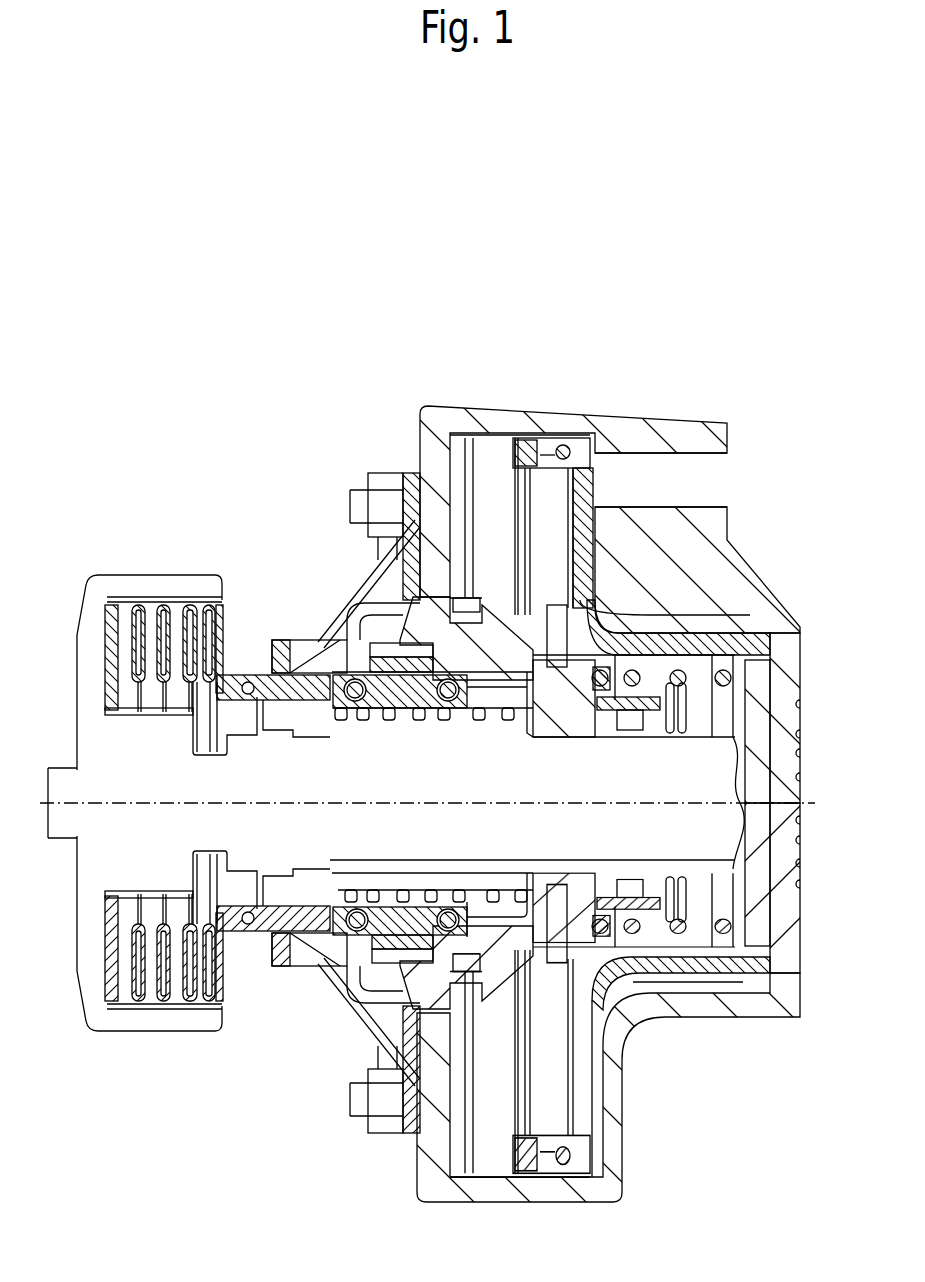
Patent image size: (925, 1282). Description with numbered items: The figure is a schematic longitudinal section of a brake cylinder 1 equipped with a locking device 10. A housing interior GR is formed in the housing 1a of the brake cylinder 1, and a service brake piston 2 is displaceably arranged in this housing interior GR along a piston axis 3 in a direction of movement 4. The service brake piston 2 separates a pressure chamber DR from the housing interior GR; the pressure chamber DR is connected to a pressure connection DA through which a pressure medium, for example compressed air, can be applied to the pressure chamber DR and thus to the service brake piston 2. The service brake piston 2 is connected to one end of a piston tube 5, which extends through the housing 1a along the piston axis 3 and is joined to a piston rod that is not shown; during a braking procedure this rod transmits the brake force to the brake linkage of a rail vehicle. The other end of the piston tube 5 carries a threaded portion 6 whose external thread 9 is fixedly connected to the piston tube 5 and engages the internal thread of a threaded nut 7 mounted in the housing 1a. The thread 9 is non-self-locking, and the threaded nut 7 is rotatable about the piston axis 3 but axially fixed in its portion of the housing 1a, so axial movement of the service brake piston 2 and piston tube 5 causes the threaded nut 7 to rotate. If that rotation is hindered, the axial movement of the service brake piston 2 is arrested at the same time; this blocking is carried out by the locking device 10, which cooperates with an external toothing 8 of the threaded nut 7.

The brake cylinder 1 is at (633, 410).
The housing 1a is at (345, 657).
The service brake piston 2 is at (573, 437).
The piston axis 3 is at (304, 800).
The direction of movement 4 is at (217, 778).
The piston tube 5 is at (362, 868).
The threaded portion 6 is at (412, 888).
The threaded nut 7 is at (384, 610).
The external toothing 8 is at (365, 1015).
The thread 9 is at (410, 940).
The locking device 10 is at (412, 642).
The housing interior GR is at (493, 467).
The pressure connection DA is at (710, 483).
The pressure chamber DR is at (712, 630).